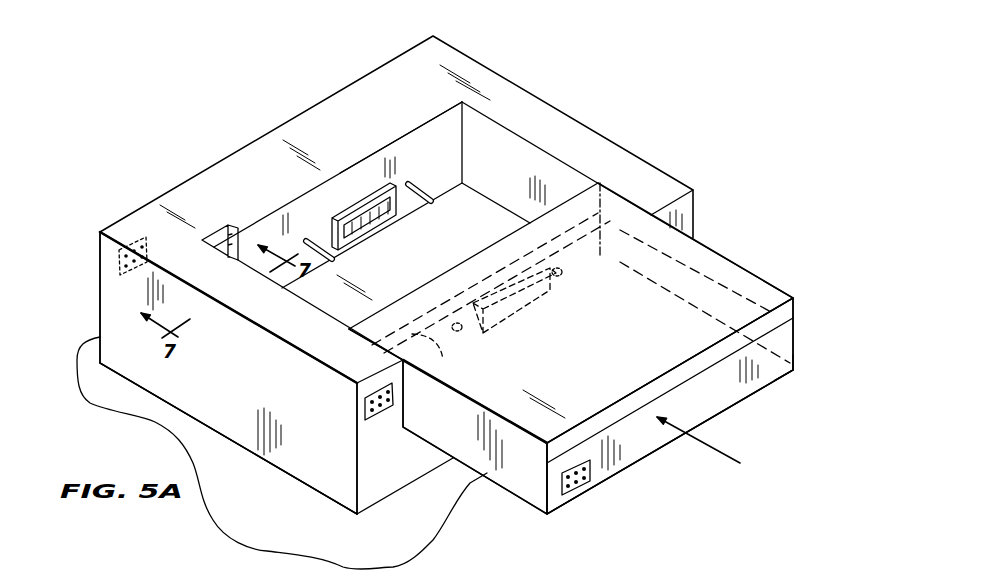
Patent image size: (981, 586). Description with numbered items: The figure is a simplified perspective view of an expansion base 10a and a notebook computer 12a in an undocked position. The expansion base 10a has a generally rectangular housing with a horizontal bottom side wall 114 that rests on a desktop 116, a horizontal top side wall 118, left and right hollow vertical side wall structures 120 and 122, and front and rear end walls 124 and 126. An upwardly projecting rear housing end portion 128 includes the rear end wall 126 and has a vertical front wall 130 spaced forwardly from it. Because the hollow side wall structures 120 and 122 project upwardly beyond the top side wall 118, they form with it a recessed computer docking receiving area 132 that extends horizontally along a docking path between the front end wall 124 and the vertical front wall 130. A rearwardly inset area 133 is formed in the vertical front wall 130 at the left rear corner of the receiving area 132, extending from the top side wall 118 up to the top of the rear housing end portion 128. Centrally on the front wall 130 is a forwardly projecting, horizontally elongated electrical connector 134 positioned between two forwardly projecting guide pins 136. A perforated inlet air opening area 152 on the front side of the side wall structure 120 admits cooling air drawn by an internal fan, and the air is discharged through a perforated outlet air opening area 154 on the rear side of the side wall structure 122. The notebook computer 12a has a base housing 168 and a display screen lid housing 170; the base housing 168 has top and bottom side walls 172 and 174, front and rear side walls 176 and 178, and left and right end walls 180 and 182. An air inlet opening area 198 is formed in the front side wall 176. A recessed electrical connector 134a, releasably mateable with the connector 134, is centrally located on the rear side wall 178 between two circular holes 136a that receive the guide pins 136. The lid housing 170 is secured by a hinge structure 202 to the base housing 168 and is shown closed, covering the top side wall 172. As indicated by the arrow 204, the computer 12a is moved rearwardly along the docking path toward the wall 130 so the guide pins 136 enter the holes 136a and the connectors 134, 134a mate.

The expansion base 10a is at (543, 52).
The notebook computer 12a is at (750, 260).
The bottom side wall 114 is at (277, 471).
The desktop 116 is at (308, 531).
The top side wall 118 is at (468, 231).
The left hollow vertical side wall structure 120 is at (277, 393).
The right hollow vertical side wall structure 122 is at (637, 150).
The front end wall 124 is at (378, 480).
The rear end wall 126 is at (100, 290).
The rear housing end portion 128 is at (343, 92).
The vertical front wall 130 is at (434, 127).
The computer docking receiving area 132 is at (520, 158).
The rearwardly inset area 133 is at (236, 223).
The electrical connector 134 is at (367, 190).
The guide pins 136 is at (438, 150).
The recessed electrical connector 134a is at (527, 297).
The circular holes 136a is at (560, 272).
The perforated inlet air opening area 152 is at (364, 408).
The perforated outlet air opening area 154 is at (118, 245).
The base housing 168 is at (797, 333).
The display screen lid housing 170 is at (800, 300).
The top side wall 172 is at (703, 370).
The bottom side wall 174 is at (740, 408).
The front side wall 176 is at (636, 440).
The rear side wall 178 is at (418, 337).
The left end wall 180 is at (530, 481).
The right end wall 182 is at (793, 355).
The air inlet opening area 198 is at (576, 481).
The hinge structure 202 is at (443, 300).
The arrow 204 is at (735, 463).